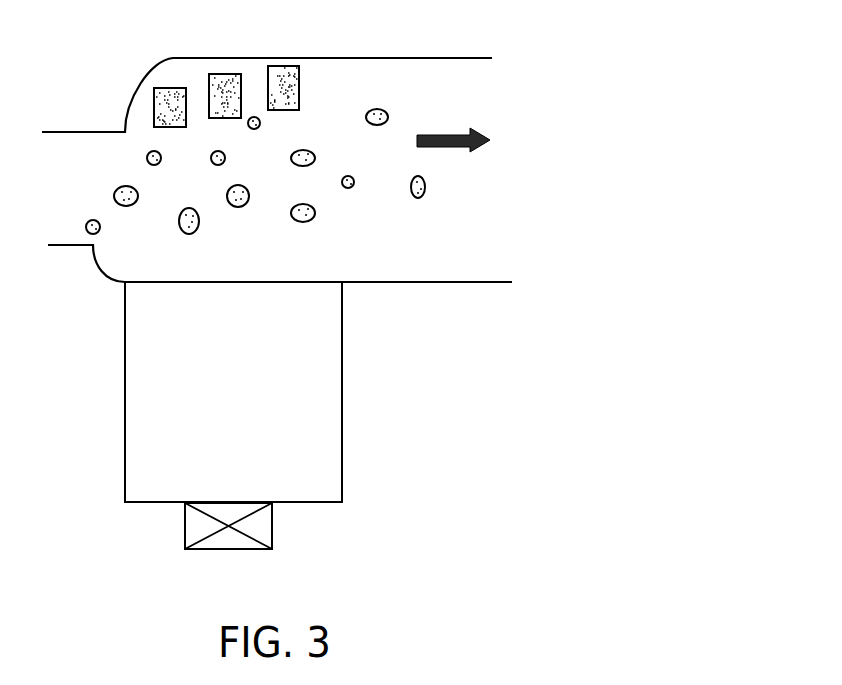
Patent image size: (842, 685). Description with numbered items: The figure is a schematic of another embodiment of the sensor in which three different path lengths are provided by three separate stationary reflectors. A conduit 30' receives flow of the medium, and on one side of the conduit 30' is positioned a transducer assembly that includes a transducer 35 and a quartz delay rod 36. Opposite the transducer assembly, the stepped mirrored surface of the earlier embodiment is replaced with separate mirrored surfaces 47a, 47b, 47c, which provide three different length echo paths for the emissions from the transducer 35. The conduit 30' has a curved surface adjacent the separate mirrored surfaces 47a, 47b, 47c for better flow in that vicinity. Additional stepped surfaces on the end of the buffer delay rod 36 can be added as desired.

The conduit 30' is at (277, 146).
The mirrored surface 47a is at (172, 86).
The mirrored surface 47b is at (230, 73).
The mirrored surface 47c is at (286, 66).
The quartz delay rod 36 is at (342, 462).
The transducer 35 is at (272, 527).